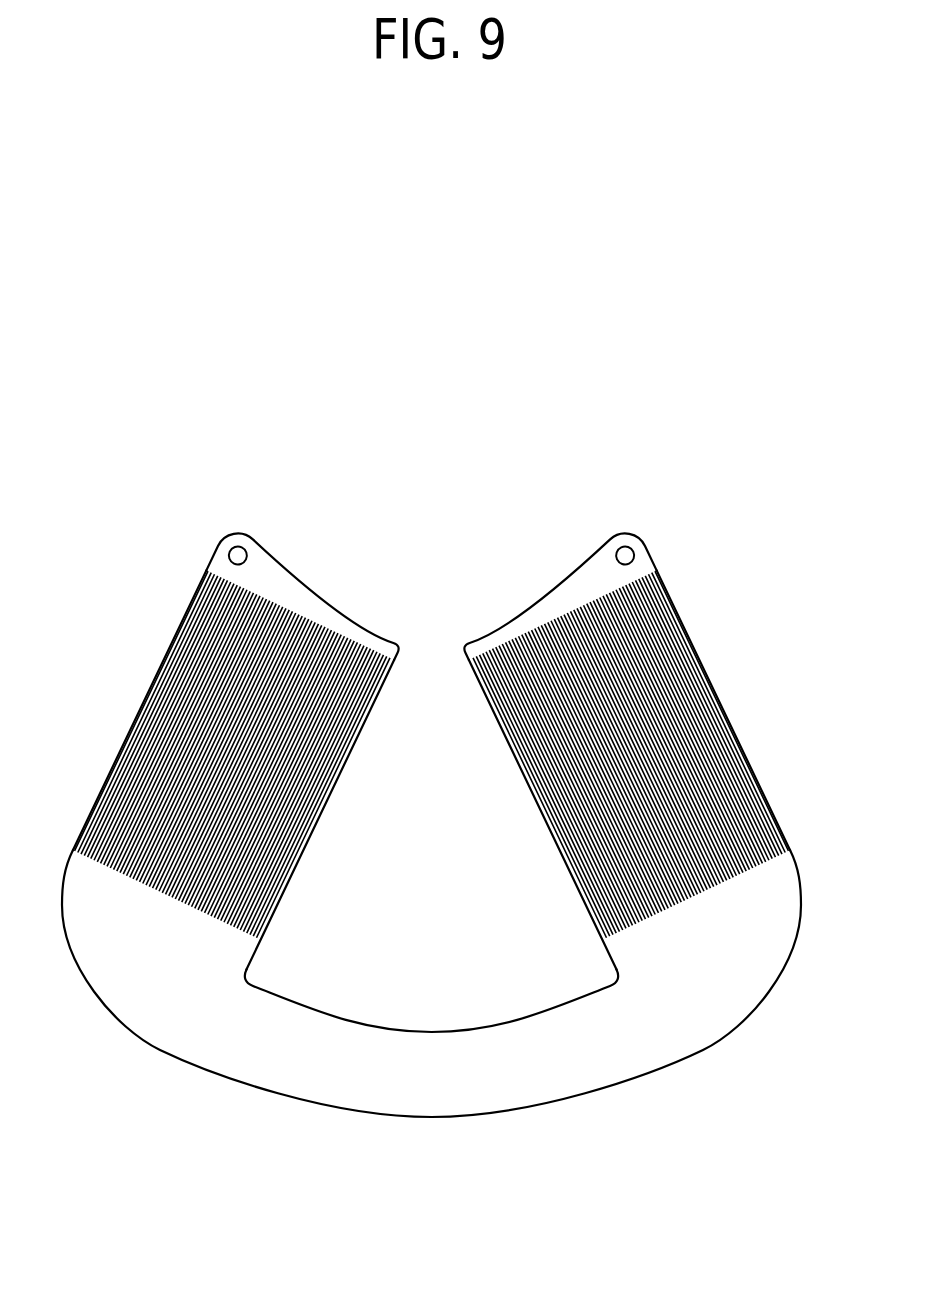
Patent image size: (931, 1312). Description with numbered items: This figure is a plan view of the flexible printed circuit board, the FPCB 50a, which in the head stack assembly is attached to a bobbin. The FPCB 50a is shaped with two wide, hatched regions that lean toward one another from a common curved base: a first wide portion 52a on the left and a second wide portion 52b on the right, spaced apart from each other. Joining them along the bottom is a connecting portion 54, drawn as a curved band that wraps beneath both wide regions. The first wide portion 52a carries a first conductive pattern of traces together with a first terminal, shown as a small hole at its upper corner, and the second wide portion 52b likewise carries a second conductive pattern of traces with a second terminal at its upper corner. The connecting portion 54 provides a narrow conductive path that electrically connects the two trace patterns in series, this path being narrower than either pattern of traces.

The FPCB 50a is at (176, 1074).
The first wide portion 52a is at (248, 699).
The second wide portion 52b is at (626, 699).
The connecting portion 54 is at (462, 1087).